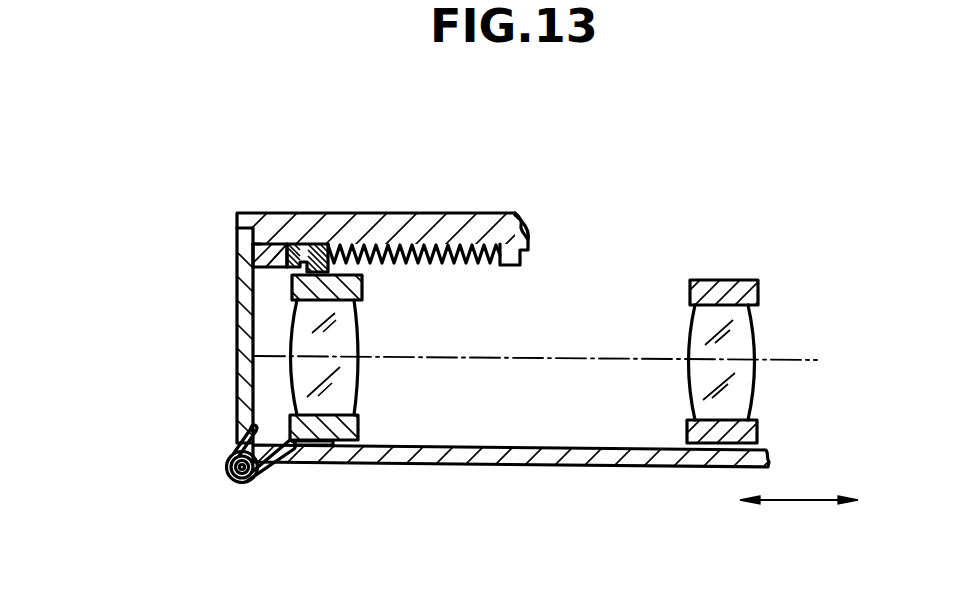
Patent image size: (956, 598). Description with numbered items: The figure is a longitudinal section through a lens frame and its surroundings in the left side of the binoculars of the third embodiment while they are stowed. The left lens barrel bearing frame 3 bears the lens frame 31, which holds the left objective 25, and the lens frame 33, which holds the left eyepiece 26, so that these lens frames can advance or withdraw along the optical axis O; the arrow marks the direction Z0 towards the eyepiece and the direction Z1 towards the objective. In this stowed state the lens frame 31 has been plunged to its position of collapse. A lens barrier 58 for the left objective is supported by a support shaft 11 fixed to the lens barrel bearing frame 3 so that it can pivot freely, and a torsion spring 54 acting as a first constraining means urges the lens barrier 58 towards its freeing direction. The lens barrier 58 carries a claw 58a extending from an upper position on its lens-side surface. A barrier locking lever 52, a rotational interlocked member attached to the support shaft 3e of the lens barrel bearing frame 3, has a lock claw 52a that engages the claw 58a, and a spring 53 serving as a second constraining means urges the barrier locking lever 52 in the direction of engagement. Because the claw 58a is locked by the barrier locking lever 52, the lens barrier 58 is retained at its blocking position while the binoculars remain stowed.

The lens barrel bearing frame 3 is at (462, 222).
The support shaft 3e is at (313, 258).
The barrier locking lever 52 is at (283, 243).
The lock claw 52a is at (270, 257).
The spring 53 is at (425, 240).
The lens barrier 58 is at (235, 335).
The claw 58a is at (152, 230).
The support shaft 11 is at (238, 484).
The torsion spring 54 is at (268, 472).
The lens frame 31 is at (332, 440).
The left objective 25 is at (360, 365).
The optical axis O is at (540, 352).
The lens frame 33 is at (730, 282).
The left eyepiece 26 is at (745, 338).
The direction Z1 is at (752, 505).
The direction Z0 is at (850, 505).